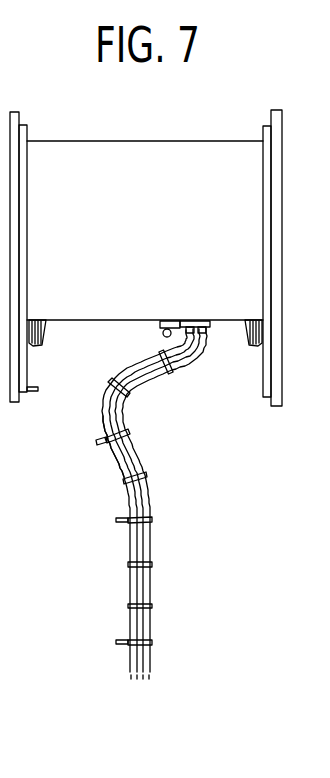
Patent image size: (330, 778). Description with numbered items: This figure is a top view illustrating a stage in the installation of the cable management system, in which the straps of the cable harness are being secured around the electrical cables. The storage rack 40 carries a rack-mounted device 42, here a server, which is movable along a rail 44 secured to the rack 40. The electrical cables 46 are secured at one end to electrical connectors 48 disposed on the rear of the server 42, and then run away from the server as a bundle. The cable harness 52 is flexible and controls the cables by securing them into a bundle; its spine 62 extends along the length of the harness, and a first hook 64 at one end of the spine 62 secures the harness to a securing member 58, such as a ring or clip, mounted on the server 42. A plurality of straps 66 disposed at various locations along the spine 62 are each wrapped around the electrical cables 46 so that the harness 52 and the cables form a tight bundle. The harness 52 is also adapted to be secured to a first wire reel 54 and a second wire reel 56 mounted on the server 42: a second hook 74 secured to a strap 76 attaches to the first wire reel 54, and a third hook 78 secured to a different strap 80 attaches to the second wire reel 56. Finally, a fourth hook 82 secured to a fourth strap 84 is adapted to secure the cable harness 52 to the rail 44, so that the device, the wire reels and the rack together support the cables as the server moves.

The storage rack 40 is at (283, 232).
The rack-mounted device 42 is at (198, 224).
The rail 44 is at (26, 133).
The electrical cables 46 is at (197, 352).
The electrical connectors 48 is at (197, 320).
The cable harness 52 is at (139, 503).
The first wire reel 54 is at (37, 318).
The second wire reel 56 is at (258, 320).
The securing member 58 is at (157, 327).
The spine 62 is at (117, 462).
The first hook 64 is at (163, 336).
The straps 66 is at (130, 390).
The second hook 74 is at (95, 442).
The strap 76 is at (130, 437).
The third hook 78 is at (118, 520).
The strap 80 is at (152, 523).
The fourth hook 82 is at (118, 642).
The fourth strap 84 is at (150, 643).